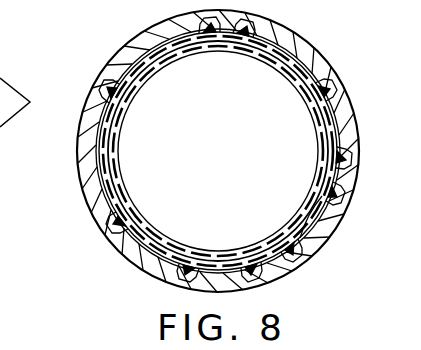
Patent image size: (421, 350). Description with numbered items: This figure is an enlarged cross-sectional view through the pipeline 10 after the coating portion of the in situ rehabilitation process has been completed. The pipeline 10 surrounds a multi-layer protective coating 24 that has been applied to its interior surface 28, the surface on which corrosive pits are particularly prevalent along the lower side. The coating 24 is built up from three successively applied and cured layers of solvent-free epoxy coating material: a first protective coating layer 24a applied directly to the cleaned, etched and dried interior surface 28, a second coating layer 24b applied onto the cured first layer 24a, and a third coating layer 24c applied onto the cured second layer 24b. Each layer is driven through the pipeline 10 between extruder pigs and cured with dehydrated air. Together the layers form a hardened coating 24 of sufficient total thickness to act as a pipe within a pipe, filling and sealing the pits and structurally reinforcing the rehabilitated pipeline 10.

The pipeline 10 is at (325, 263).
The multi-layer protective coating 24 is at (130, 187).
The first protective coating layer 24a is at (108, 238).
The second coating layer 24b is at (150, 231).
The third coating layer 24c is at (299, 222).
The interior surface 28 is at (313, 192).